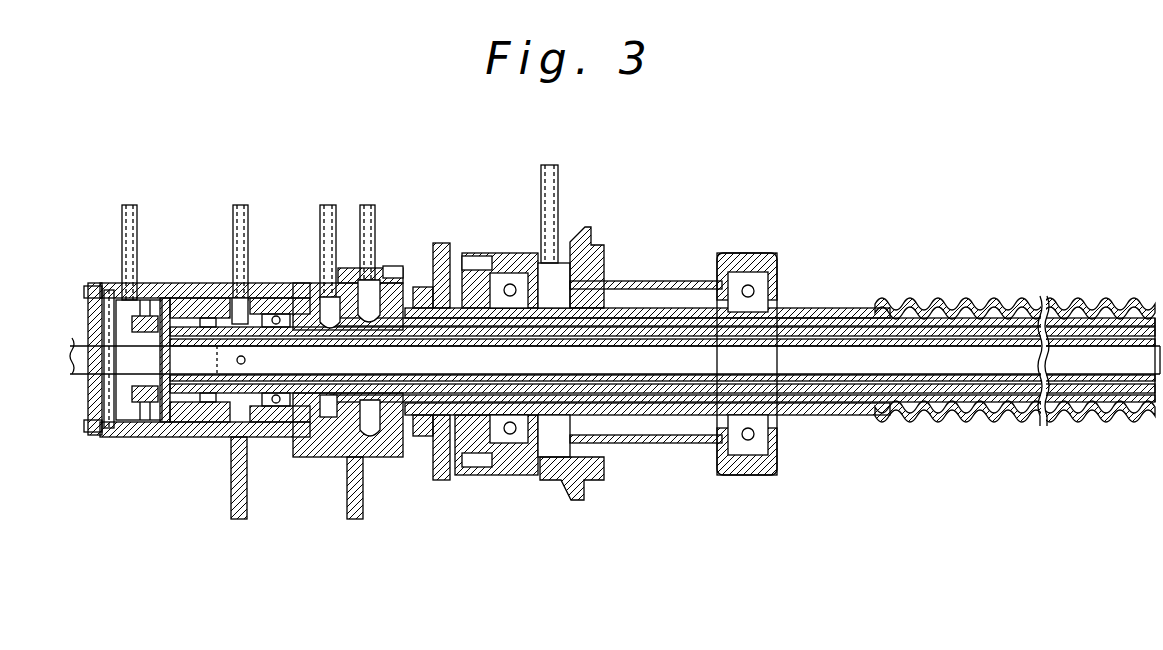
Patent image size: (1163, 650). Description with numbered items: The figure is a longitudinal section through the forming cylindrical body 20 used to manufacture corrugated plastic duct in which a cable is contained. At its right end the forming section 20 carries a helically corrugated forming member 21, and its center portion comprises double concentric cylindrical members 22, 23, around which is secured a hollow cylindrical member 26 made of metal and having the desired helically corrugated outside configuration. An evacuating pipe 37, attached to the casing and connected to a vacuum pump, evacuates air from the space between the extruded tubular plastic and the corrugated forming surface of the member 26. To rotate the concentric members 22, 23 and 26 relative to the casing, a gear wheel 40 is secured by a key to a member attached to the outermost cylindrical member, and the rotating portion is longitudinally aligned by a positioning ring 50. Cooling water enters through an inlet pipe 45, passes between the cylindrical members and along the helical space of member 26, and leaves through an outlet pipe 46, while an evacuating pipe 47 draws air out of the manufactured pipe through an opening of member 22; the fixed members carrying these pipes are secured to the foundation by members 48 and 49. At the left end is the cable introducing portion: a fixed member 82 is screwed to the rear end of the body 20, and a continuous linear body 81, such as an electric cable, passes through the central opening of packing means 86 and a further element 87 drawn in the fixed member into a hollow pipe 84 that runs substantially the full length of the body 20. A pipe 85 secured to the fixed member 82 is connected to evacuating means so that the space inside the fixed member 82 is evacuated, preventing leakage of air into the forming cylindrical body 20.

The forming section 20 is at (482, 373).
The helically corrugated forming member 21 is at (966, 309).
The cylindrical member 22 is at (867, 343).
The cylindrical member 23 is at (750, 318).
The hollow cylindrical member 26 is at (1085, 310).
The evacuating pipe 37 is at (553, 165).
The gear wheel 40 is at (443, 243).
The inlet pipe 45 is at (372, 204).
The outlet pipe 46 is at (330, 204).
The evacuating pipe 47 is at (242, 204).
The member 48 is at (238, 519).
The member 49 is at (356, 519).
The positioning ring 50 is at (174, 433).
The continuous linear body 81 is at (76, 371).
The fixed member 82 is at (176, 286).
The hollow pipe 84 is at (594, 385).
The pipe 85 is at (131, 204).
The packing means 86 is at (149, 410).
The bolt 87 is at (126, 323).